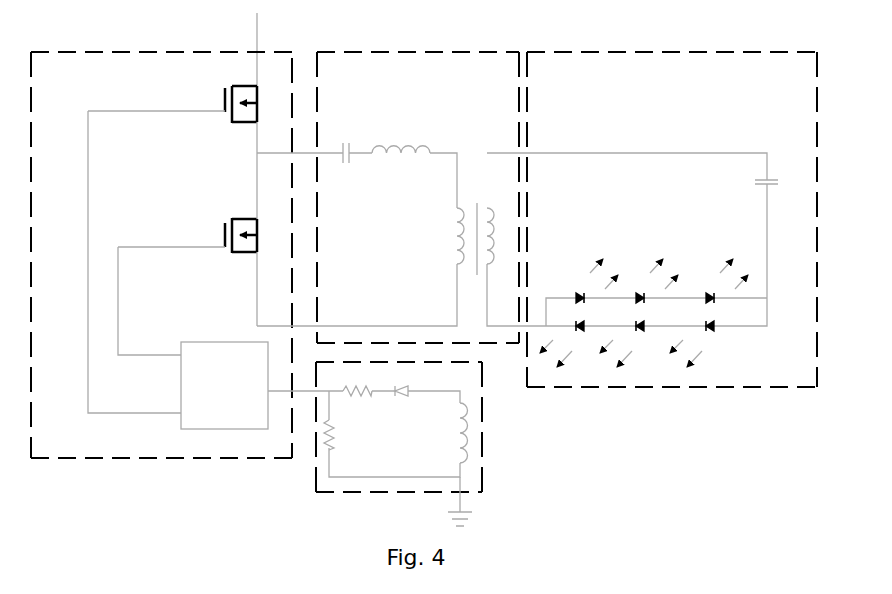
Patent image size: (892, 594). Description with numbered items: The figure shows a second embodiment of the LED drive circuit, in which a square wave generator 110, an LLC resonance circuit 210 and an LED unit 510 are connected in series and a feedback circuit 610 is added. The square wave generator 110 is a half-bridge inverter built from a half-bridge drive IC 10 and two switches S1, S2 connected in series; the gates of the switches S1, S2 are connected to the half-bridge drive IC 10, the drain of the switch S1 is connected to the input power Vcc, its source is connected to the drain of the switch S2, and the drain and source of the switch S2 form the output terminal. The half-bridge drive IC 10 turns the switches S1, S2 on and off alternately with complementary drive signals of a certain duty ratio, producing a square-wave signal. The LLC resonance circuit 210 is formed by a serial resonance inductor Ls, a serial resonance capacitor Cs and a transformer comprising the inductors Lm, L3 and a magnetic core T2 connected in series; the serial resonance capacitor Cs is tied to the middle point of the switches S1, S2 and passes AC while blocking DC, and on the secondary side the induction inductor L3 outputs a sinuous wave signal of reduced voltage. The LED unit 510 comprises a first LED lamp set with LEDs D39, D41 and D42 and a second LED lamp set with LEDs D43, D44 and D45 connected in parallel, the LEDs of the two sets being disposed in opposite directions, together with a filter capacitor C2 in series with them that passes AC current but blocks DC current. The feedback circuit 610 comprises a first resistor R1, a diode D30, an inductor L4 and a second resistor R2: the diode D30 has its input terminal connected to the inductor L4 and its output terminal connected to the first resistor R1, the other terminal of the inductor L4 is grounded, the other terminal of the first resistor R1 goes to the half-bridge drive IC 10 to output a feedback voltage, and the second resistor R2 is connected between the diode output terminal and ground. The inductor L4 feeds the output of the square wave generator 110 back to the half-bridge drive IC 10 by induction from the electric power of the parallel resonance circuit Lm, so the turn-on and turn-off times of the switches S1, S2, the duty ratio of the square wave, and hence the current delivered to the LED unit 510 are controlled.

The square wave generator 110 is at (117, 52).
The LLC resonance circuit 210 is at (378, 52).
The LED unit 510 is at (603, 52).
The feedback circuit 610 is at (482, 438).
The half-bridge drive IC 10 is at (215, 429).
The input power Vcc is at (262, 43).
The switch S1 is at (172, 249).
The switch S2 is at (187, 286).
The serial resonance capacitor Cs is at (342, 143).
The serial resonance inductor Ls is at (401, 138).
The inductor Lm is at (444, 236).
The induction inductor L3 is at (500, 236).
The magnetic core T2 is at (469, 256).
The filter capacitor C2 is at (778, 185).
The LED D39 is at (587, 281).
The LED D41 is at (648, 281).
The LED D42 is at (718, 281).
The LED D43 is at (563, 344).
The LED D44 is at (627, 344).
The LED D45 is at (698, 344).
The first resistor R1 is at (357, 383).
The second resistor R2 is at (340, 435).
The diode D30 is at (407, 382).
The inductor L4 is at (447, 433).